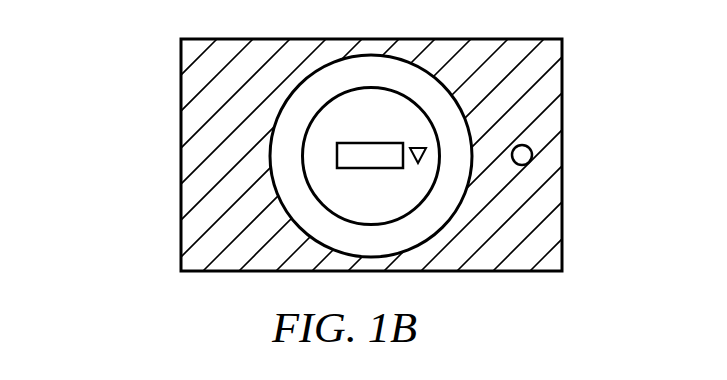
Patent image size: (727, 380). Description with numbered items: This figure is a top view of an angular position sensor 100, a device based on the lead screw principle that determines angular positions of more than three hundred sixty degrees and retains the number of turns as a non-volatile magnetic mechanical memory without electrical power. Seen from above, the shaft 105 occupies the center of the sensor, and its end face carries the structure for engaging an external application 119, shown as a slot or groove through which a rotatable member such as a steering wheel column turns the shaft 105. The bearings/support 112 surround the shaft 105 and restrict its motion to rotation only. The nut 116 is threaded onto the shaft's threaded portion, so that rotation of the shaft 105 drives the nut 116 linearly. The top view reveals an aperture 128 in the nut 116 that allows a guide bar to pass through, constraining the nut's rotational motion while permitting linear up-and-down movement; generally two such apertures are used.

The angular position sensor 100 is at (146, 168).
The shaft 105 is at (348, 117).
The bearings/support 112 is at (181, 84).
The nut 116 is at (562, 62).
The structure for engaging an external application 119 is at (380, 153).
The aperture 128 is at (532, 153).